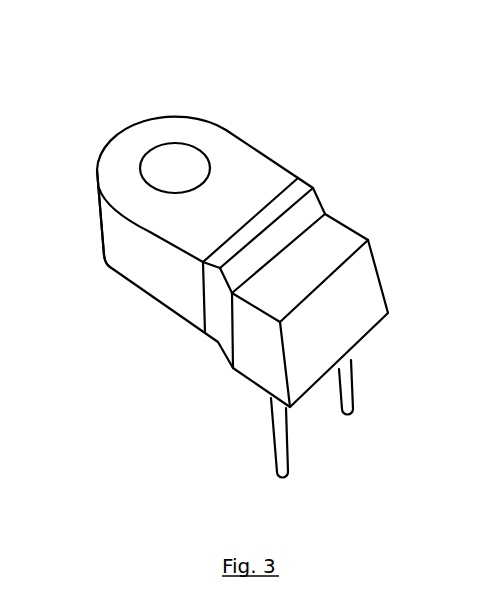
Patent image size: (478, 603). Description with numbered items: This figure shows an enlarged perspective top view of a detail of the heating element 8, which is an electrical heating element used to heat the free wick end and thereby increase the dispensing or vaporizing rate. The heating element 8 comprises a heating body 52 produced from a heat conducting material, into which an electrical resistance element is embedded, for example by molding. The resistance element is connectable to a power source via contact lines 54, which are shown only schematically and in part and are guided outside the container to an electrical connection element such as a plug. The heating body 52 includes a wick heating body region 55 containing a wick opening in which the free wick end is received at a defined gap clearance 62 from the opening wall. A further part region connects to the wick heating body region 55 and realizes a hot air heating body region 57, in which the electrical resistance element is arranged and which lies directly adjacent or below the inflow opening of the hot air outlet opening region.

The heating element 8 is at (225, 267).
The heating body 52 is at (174, 290).
The contact lines 54 is at (348, 392).
The wick heating body region 55 is at (96, 232).
The hot air heating body region 57 is at (370, 236).
The gap clearance 62 is at (175, 160).